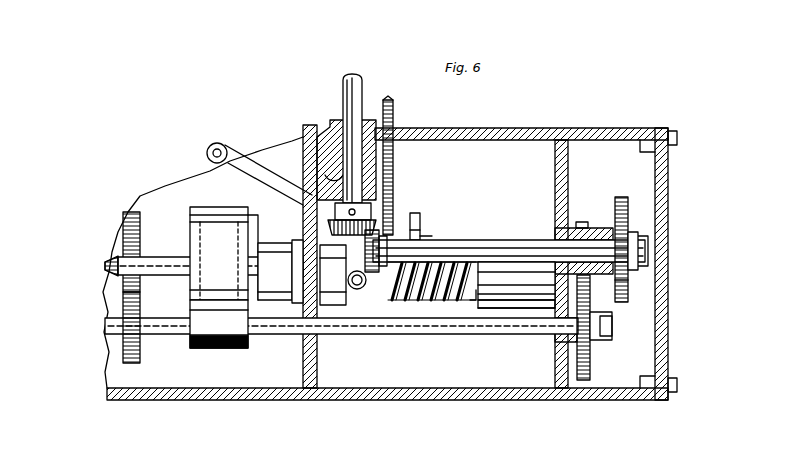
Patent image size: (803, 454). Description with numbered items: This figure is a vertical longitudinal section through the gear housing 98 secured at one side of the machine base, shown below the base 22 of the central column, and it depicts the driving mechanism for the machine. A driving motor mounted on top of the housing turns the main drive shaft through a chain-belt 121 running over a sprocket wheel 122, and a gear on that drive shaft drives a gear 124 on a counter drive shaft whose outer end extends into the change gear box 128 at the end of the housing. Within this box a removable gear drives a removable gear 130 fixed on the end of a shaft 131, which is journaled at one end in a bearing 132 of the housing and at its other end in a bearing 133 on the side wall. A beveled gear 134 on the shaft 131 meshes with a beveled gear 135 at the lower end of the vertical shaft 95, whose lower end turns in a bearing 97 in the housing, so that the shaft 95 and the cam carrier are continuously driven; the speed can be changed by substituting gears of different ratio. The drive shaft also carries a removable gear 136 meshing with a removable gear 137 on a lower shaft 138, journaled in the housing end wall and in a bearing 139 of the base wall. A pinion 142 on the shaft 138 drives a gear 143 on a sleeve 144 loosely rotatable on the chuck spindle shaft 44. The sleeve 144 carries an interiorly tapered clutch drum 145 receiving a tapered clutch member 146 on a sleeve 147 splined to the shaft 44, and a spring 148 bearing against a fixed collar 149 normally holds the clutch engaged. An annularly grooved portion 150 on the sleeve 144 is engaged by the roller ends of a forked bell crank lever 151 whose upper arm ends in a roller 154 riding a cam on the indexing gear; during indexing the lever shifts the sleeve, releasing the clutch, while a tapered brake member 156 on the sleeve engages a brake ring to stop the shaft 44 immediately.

The base 22 is at (262, 400).
The shaft 44 is at (110, 262).
The vertical shaft 95 is at (349, 92).
The bearing 97 is at (322, 125).
The gear housing 98 is at (482, 129).
The chain-belt 121 is at (372, 226).
The sprocket wheel 122 is at (372, 275).
The gear 124 is at (421, 225).
The change gear box 128 is at (590, 398).
The removable gear 130 is at (628, 205).
The shaft 131 is at (508, 244).
The bearing 132 is at (600, 278).
The bearing 133 is at (402, 302).
The beveled gear 134 is at (394, 222).
The beveled gear 135 is at (394, 208).
The removable gear 136 is at (583, 221).
The removable gear 137 is at (592, 360).
The shaft 138 is at (275, 334).
The bearing 139 is at (555, 340).
The pinion 142 is at (140, 353).
The gear 143 is at (140, 226).
The sleeve 144 is at (204, 269).
The clutch drum 145 is at (216, 211).
The clutch member 146 is at (250, 217).
The sleeve 147 is at (268, 250).
The spring 148 is at (478, 304).
The collar 149 is at (480, 266).
The annularly grooved portion 150 is at (352, 292).
The bell crank lever 151 is at (268, 165).
The roller 154 is at (226, 146).
The brake member 156 is at (292, 290).